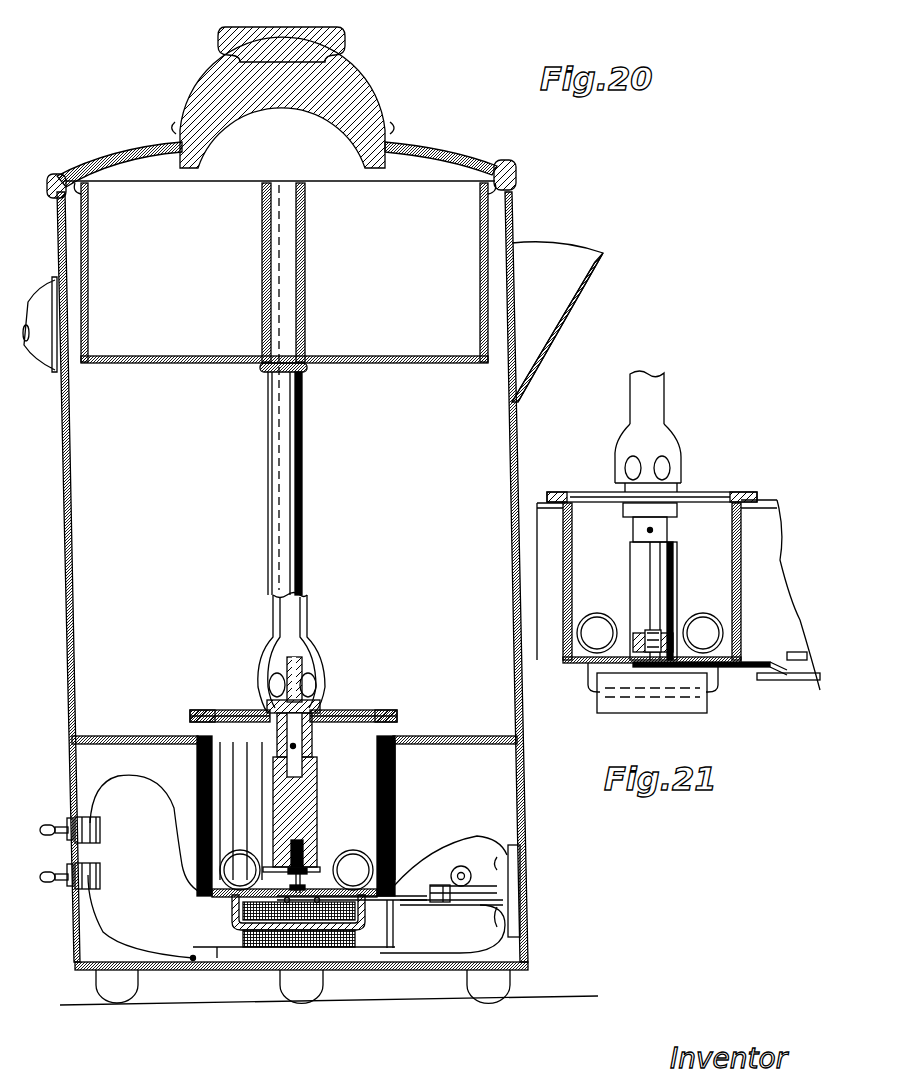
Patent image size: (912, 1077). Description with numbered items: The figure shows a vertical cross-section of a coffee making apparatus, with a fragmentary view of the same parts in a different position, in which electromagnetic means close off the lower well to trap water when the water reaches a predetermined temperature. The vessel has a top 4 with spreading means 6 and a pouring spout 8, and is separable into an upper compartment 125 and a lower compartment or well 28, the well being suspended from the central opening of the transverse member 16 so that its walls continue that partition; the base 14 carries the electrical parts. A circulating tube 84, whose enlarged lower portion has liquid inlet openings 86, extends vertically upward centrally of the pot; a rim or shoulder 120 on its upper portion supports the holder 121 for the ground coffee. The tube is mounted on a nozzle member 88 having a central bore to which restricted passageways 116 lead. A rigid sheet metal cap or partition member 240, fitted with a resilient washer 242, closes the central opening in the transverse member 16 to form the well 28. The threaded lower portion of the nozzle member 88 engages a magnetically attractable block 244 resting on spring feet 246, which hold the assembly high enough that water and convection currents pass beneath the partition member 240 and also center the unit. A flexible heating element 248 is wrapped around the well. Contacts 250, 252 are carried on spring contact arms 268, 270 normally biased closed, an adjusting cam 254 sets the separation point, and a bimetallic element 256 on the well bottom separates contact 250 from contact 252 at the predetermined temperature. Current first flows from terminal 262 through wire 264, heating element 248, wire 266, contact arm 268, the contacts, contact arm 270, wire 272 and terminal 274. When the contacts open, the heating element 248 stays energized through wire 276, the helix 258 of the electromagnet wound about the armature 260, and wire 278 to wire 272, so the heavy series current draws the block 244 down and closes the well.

In FIG. 20, the top 4 is at (117, 148).
In FIG. 20, the spreading means 6 is at (333, 37).
In FIG. 20, the pouring spout 8 is at (562, 302).
In FIG. 20, the base 14 is at (530, 797).
In FIG. 20, the transverse member 16 is at (112, 728).
In FIG. 20, the well 28 is at (233, 777).
In FIG. 21, the well 28 is at (715, 592).
In FIG. 20, the circulating tube 84 is at (305, 480).
In FIG. 21, the circulating tube 84 is at (655, 388).
In FIG. 21, the liquid inlet openings 86 is at (662, 458).
In FIG. 20, the nozzle member 88 is at (313, 697).
In FIG. 21, the nozzle member 88 is at (667, 523).
In FIG. 20, the restricted passageways 116 is at (308, 756).
In FIG. 21, the restricted passageways 116 is at (645, 530).
In FIG. 20, the rim or shoulder 120 is at (308, 372).
In FIG. 20, the holder 121 is at (207, 348).
In FIG. 20, the upper compartment 125 is at (107, 487).
In FIG. 20, the cap or partition member 240 is at (220, 708).
In FIG. 21, the cap or partition member 240 is at (583, 490).
In FIG. 20, the resilient washer 242 is at (397, 713).
In FIG. 21, the resilient washer 242 is at (555, 492).
In FIG. 20, the block 244 is at (320, 810).
In FIG. 21, the block 244 is at (658, 563).
In FIG. 20, the spring feet 246 is at (240, 850).
In FIG. 21, the spring feet 246 is at (593, 615).
In FIG. 20, the flexible heating element 248 is at (397, 770).
In FIG. 20, the contact 250 is at (443, 893).
In FIG. 21, the contact 250 is at (795, 682).
In FIG. 20, the contact 252 is at (438, 900).
In FIG. 21, the contact 252 is at (792, 652).
In FIG. 20, the adjusting cam 254 is at (470, 872).
In FIG. 20, the bimetallic element 256 is at (392, 905).
In FIG. 21, the bimetallic element 256 is at (733, 677).
In FIG. 20, the helix 258 is at (270, 947).
In FIG. 21, the helix 258 is at (628, 703).
In FIG. 20, the armature 260 is at (232, 907).
In FIG. 21, the armature 260 is at (592, 680).
In FIG. 20, the terminal 262 is at (48, 824).
In FIG. 20, the wire 264 is at (125, 775).
In FIG. 20, the wire 266 is at (478, 837).
In FIG. 20, the contact arm 268 is at (470, 888).
In FIG. 21, the contact arm 268 is at (813, 650).
In FIG. 20, the contact arm 270 is at (490, 910).
In FIG. 21, the contact arm 270 is at (783, 687).
In FIG. 20, the wire 272 is at (458, 953).
In FIG. 20, the terminal 274 is at (50, 882).
In FIG. 20, the wire 276 is at (372, 948).
In FIG. 20, the wire 278 is at (215, 948).